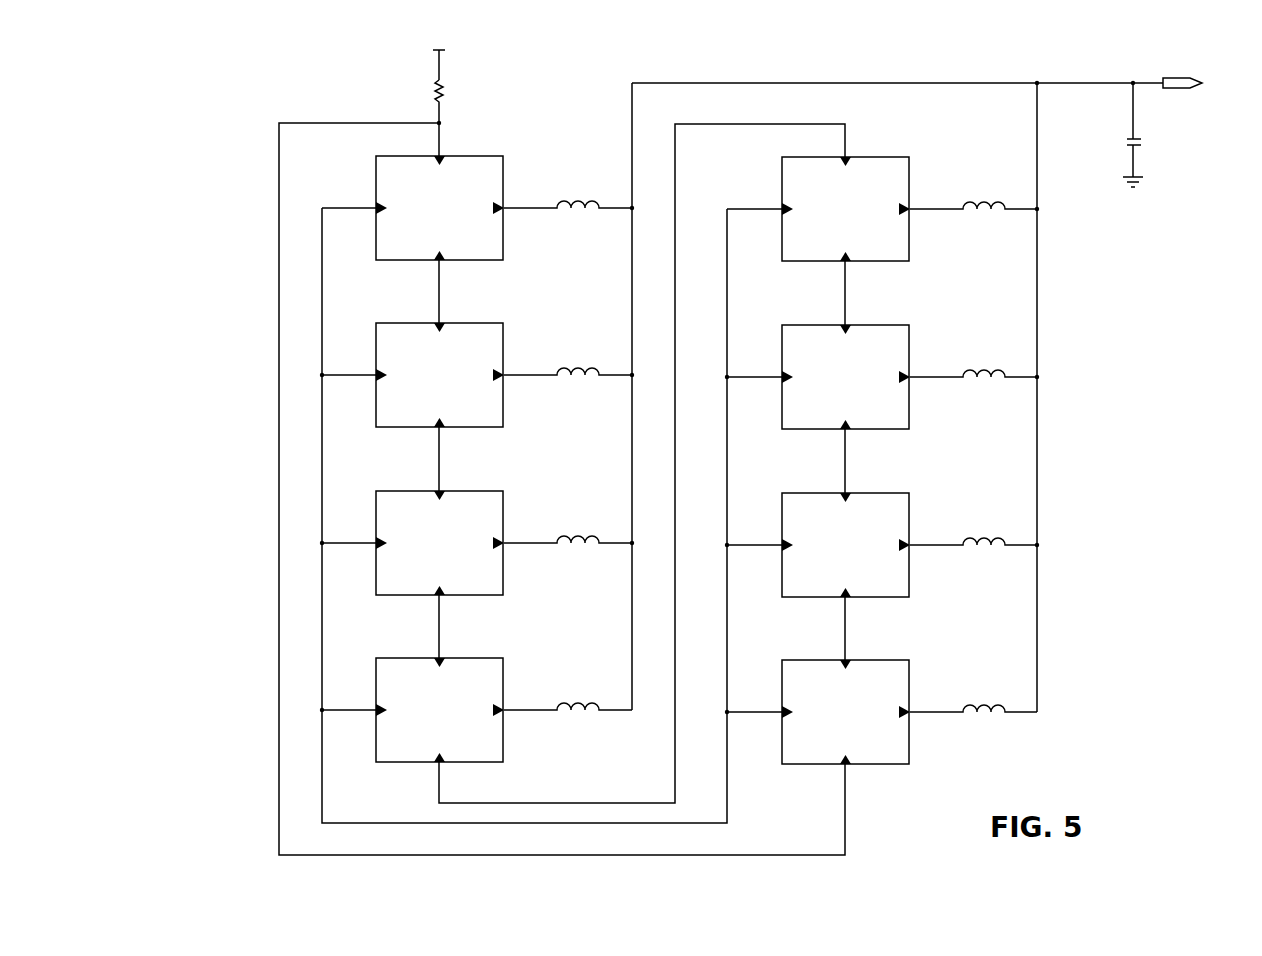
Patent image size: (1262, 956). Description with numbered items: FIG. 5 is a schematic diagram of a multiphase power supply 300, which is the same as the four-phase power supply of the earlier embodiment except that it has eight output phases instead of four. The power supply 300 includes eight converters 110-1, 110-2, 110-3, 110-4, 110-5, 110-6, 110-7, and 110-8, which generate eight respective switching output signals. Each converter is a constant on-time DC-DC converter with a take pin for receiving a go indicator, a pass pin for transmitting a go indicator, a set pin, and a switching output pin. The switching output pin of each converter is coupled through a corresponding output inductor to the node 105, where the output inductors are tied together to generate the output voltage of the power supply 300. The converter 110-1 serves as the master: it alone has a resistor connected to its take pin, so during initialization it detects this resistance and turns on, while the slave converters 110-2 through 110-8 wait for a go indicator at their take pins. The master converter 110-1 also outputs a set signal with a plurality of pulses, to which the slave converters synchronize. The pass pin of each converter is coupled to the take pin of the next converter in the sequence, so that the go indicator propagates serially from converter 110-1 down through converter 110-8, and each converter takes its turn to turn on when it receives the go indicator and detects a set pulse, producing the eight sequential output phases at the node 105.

The multiphase power supply 300 is at (190, 173).
The node 105 is at (1177, 78).
The converter 110-1 is at (482, 156).
The converter 110-2 is at (482, 323).
The converter 110-3 is at (482, 491).
The converter 110-4 is at (482, 658).
The converter 110-5 is at (889, 157).
The converter 110-6 is at (889, 325).
The converter 110-7 is at (889, 493).
The converter 110-8 is at (889, 660).